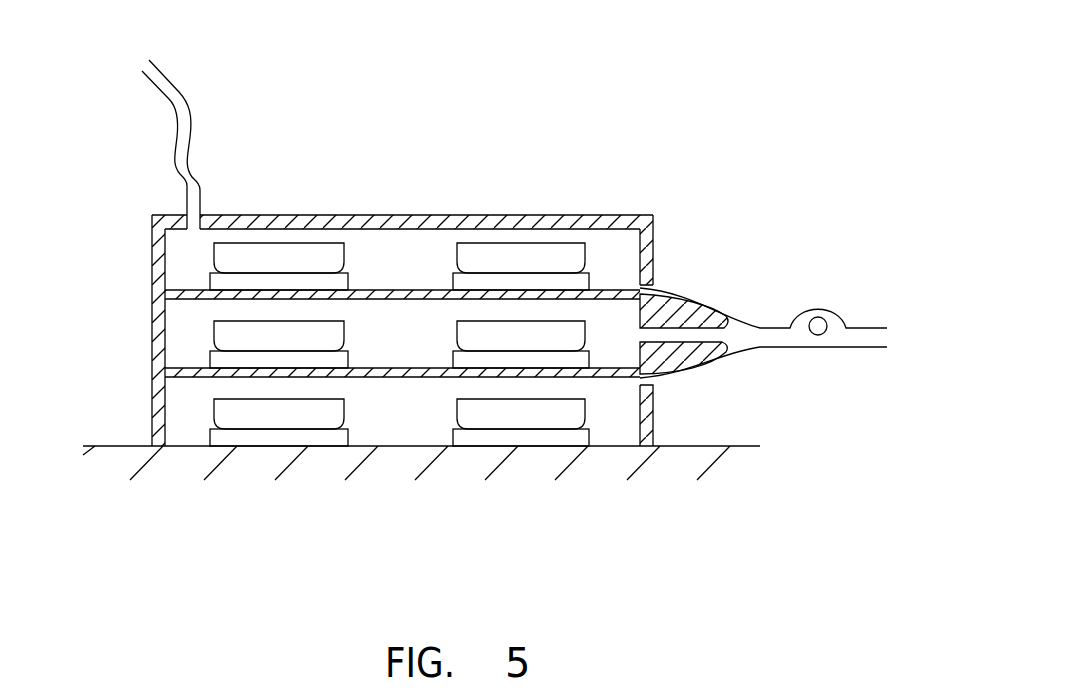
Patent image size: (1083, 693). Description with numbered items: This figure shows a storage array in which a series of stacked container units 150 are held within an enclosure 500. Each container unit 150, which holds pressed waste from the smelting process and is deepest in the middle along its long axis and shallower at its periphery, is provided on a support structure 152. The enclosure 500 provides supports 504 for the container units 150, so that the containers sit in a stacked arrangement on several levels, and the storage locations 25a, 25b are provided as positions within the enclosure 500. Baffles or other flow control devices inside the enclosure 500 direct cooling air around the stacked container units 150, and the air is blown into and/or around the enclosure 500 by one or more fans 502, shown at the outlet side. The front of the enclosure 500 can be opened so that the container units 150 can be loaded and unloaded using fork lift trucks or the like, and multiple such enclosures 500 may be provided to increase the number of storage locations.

The enclosure 500 is at (623, 208).
The fan 502 is at (818, 317).
The support 504 is at (413, 290).
The storage location 25a is at (263, 454).
The storage location 25b is at (355, 253).
The container unit 150 is at (523, 412).
The support structure 152 is at (487, 438).